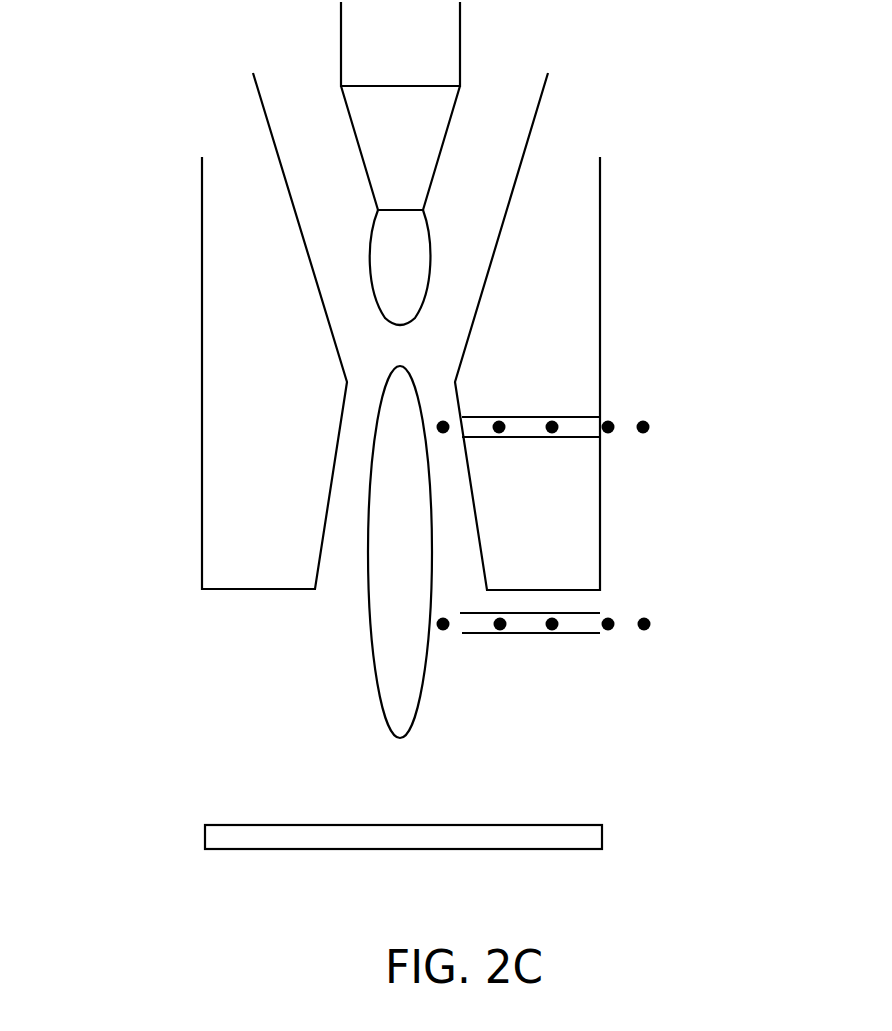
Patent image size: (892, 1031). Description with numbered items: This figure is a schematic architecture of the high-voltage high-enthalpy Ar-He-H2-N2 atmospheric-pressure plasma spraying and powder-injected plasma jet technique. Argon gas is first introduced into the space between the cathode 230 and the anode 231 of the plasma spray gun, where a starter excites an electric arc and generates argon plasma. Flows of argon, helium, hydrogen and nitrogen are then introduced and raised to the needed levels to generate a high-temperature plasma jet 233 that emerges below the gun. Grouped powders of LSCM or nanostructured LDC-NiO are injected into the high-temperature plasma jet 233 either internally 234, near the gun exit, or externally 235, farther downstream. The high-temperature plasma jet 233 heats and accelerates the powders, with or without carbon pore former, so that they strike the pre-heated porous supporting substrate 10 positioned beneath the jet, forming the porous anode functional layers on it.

The supporting substrate 10 is at (592, 837).
The cathode 230 is at (408, 270).
The anode 231 is at (223, 527).
The high-temperature plasma jet 233 is at (410, 685).
The internal powder injection 234 is at (648, 423).
The external powder injection 235 is at (650, 621).